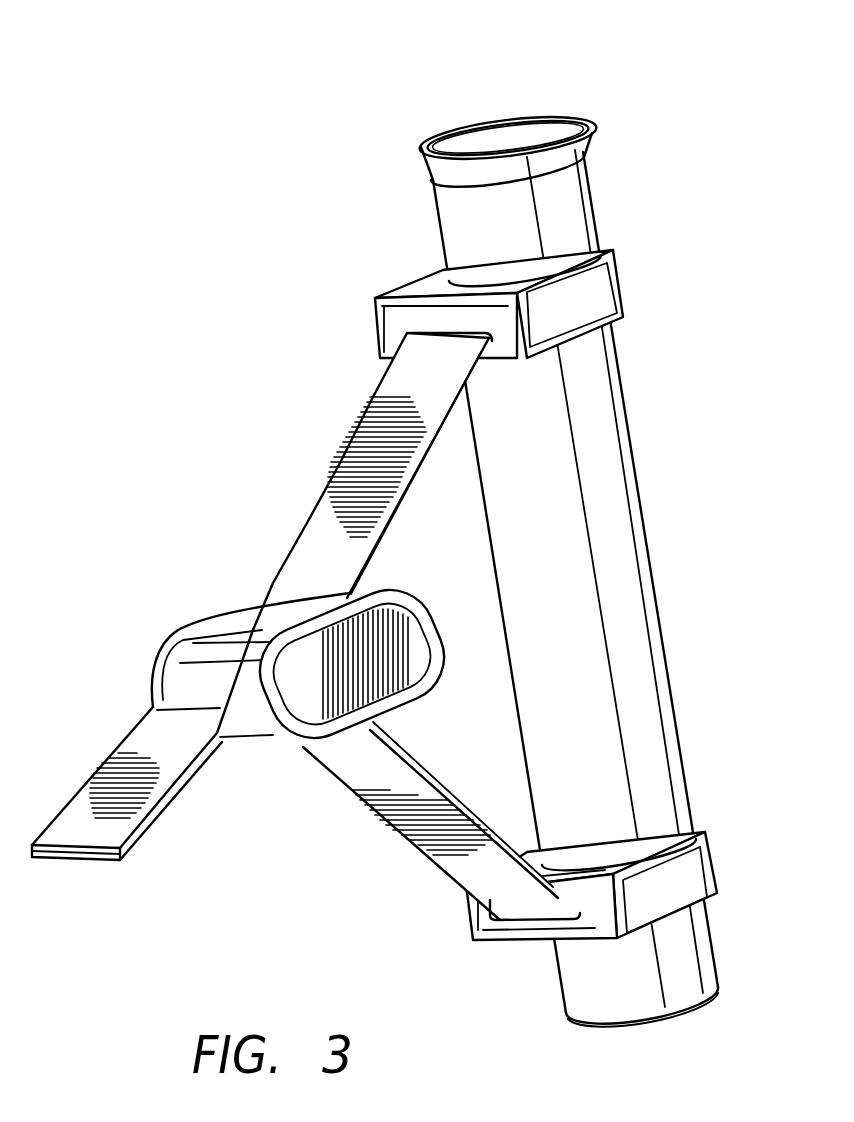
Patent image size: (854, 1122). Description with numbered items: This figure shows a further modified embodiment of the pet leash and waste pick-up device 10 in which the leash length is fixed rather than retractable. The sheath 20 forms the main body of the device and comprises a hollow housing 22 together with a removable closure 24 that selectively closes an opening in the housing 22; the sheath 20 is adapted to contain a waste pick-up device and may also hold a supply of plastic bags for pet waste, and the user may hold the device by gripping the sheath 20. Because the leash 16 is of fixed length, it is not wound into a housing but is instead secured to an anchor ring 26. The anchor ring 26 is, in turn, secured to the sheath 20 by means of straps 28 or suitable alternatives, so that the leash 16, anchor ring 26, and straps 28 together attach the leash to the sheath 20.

The pet leash and waste pick-up device 10 is at (390, 520).
The leash 16 is at (97, 793).
The sheath 20 is at (562, 520).
The hollow housing 22 is at (593, 425).
The removable closure 24 is at (592, 134).
The anchor ring 26 is at (312, 712).
The straps 28 is at (357, 445).